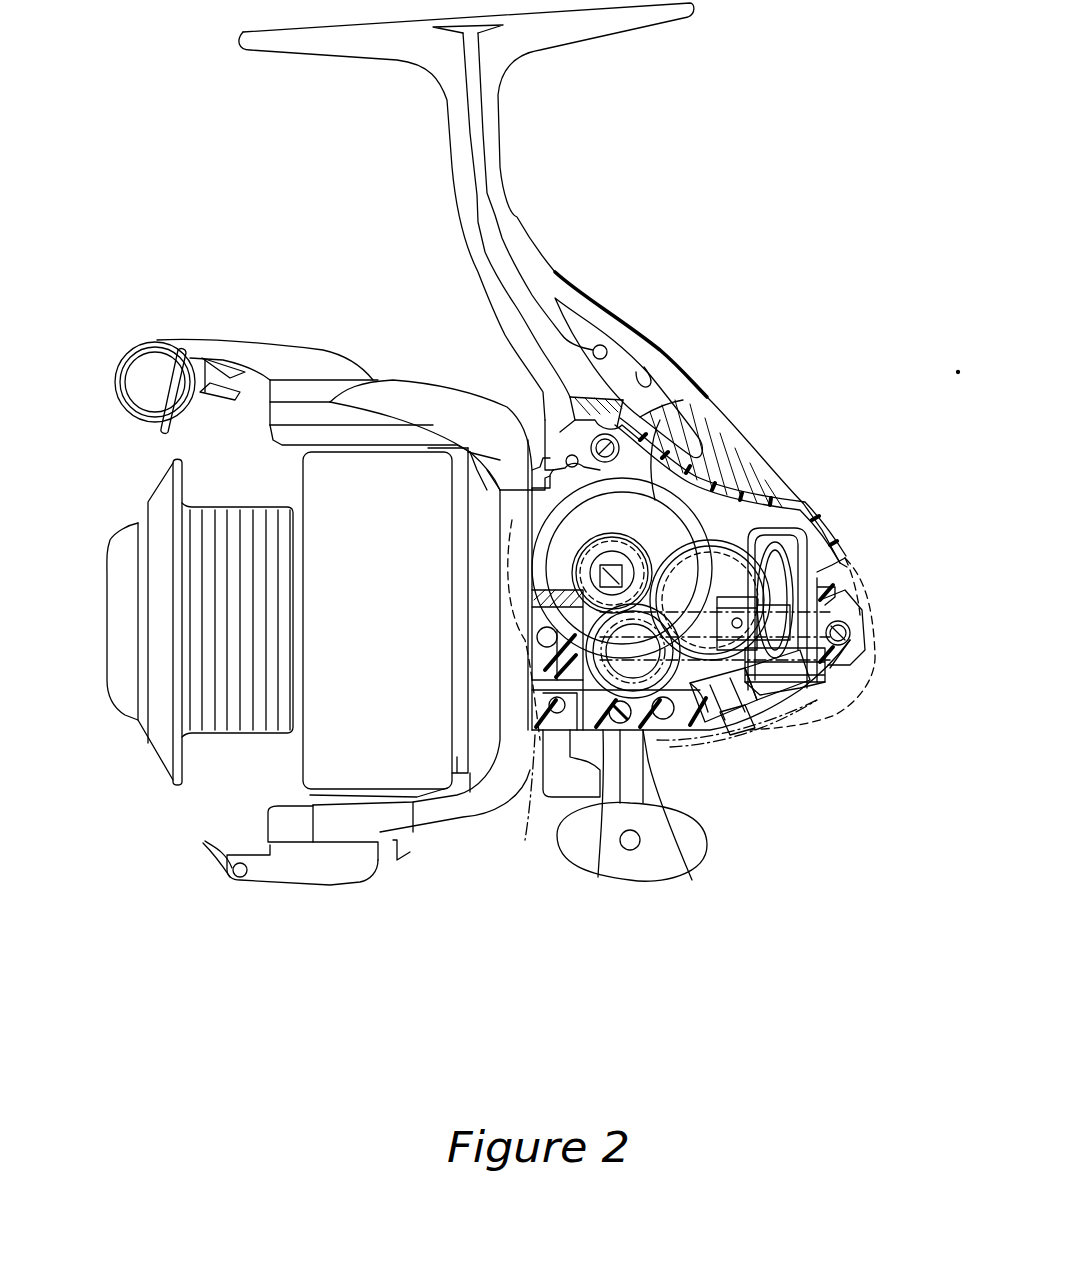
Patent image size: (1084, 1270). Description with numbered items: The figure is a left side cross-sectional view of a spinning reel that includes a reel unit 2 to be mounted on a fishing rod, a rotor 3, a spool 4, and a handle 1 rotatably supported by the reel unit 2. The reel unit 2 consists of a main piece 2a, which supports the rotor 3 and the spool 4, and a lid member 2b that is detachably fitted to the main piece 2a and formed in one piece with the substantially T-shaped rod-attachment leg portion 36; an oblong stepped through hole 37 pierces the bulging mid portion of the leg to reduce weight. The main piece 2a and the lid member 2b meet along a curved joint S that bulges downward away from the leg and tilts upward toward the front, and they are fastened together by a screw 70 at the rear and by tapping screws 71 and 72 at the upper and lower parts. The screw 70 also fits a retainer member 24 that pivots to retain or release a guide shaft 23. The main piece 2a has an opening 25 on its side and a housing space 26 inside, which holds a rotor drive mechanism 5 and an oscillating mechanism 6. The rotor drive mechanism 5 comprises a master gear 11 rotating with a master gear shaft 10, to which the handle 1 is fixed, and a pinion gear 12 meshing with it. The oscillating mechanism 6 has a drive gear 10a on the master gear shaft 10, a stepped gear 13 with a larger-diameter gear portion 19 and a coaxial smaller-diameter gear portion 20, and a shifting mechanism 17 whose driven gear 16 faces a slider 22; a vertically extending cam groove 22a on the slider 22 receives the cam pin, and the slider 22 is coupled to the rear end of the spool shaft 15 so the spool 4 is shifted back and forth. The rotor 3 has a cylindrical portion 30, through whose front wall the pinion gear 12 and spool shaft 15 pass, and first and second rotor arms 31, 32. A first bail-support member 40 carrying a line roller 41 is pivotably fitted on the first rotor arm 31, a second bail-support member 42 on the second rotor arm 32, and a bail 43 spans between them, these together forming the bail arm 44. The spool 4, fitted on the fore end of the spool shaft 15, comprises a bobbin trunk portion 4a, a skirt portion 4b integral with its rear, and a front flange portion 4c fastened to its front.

The handle 1 is at (740, 842).
The reel unit 2 is at (608, 138).
The main piece 2a is at (847, 552).
The lid member 2b is at (700, 415).
The rotor 3 is at (490, 803).
The spool 4 is at (222, 717).
The bobbin trunk portion 4a is at (237, 507).
The skirt portion 4b is at (340, 452).
The front flange portion 4c is at (175, 463).
The rotor drive mechanism 5 is at (790, 495).
The oscillating mechanism 6 is at (713, 693).
The master gear shaft 10 is at (668, 503).
The drive gear 10a is at (613, 555).
The master gear 11 is at (523, 490).
The pinion gear 12 is at (470, 450).
The stepped gear 13 is at (677, 687).
The spool shaft 15 is at (537, 750).
The driven gear 16 is at (740, 720).
The shifting mechanism 17 is at (763, 710).
The larger-diameter gear portion 19 is at (608, 850).
The smaller-diameter gear portion 20 is at (683, 858).
The slider 22 is at (815, 567).
The cam groove 22a is at (805, 690).
The guide shaft 23 is at (803, 713).
The retainer member 24 is at (848, 625).
The opening 25 is at (578, 447).
The housing space 26 is at (820, 540).
The cylindrical portion 30 is at (465, 803).
The first rotor arm 31 is at (415, 395).
The second rotor arm 32 is at (403, 842).
The rod-attachment leg portion 36 is at (517, 232).
The through hole 37 is at (653, 377).
The first bail-support member 40 is at (243, 340).
The line roller 41 is at (140, 342).
The second bail-support member 42 is at (285, 873).
The bail 43 is at (172, 427).
The bail arm 44 is at (115, 408).
The screw 70 is at (830, 668).
The tapping screw 71 is at (590, 423).
The tapping screw 72 is at (652, 860).
The joint S is at (800, 498).